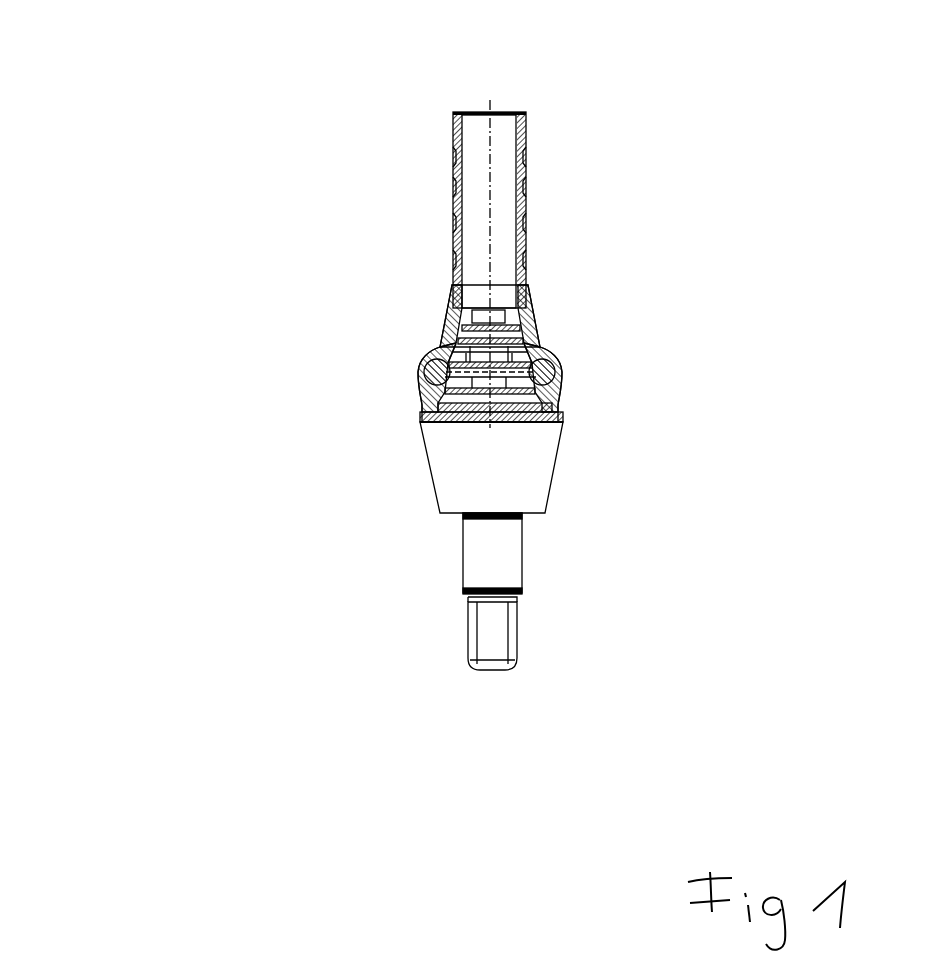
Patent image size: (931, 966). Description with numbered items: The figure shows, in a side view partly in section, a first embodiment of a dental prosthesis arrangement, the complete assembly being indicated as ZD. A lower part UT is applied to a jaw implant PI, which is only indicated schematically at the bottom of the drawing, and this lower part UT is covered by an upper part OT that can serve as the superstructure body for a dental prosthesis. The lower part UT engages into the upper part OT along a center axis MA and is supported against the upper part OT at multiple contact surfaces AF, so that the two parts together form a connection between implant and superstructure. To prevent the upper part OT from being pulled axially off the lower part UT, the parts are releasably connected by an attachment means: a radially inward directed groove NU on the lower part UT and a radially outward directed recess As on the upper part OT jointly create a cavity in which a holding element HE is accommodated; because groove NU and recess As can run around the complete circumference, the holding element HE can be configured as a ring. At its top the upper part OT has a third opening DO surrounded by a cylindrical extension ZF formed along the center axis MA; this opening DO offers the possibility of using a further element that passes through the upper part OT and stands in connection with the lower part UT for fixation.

The third opening DO is at (466, 90).
The center axis MA is at (496, 142).
The cylindrical extension ZF is at (527, 192).
The contact surfaces AF is at (535, 320).
The holding element HE is at (555, 350).
The recess As is at (560, 363).
The groove NU is at (420, 372).
The upper part OT is at (418, 405).
The lower part UT is at (425, 430).
The jaw implant PI is at (523, 565).
The ignition lead-through assembly ZD is at (216, 377).